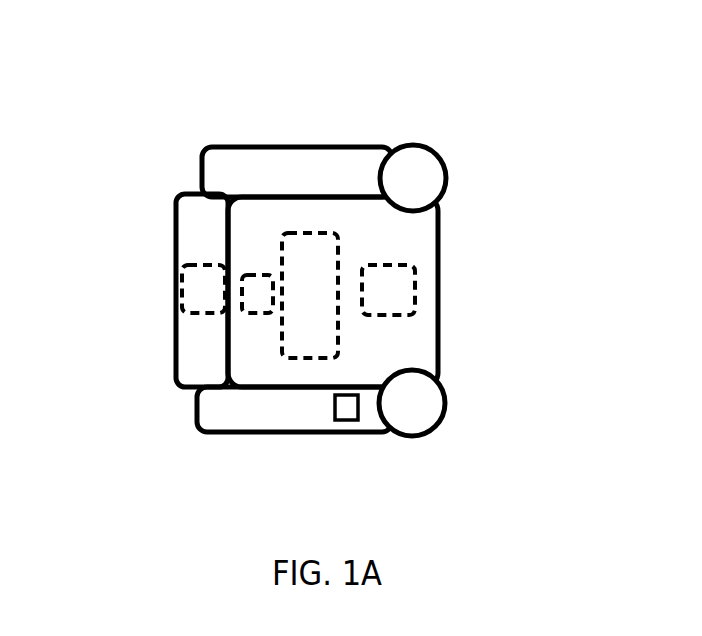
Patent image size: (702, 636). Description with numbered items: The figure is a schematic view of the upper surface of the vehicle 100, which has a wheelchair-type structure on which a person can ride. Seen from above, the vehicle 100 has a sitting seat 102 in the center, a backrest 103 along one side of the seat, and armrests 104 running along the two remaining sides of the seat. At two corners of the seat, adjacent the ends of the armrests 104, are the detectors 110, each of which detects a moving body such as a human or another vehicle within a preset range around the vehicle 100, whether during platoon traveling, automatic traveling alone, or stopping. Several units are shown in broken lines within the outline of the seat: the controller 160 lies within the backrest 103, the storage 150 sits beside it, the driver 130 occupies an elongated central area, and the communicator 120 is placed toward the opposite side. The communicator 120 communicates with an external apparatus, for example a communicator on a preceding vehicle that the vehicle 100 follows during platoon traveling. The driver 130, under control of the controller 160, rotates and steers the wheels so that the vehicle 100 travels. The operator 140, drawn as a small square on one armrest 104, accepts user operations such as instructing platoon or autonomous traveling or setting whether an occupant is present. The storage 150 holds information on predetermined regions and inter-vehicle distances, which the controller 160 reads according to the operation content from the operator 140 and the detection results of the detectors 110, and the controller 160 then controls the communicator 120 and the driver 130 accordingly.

The vehicle 100 is at (344, 48).
The sitting seat 102 is at (440, 226).
The backrest 103 is at (176, 215).
The armrests 104 is at (260, 147).
The detectors 110 is at (430, 152).
The communicator 120 is at (415, 286).
The driver 130 is at (318, 233).
The operator 140 is at (356, 422).
The storage 150 is at (258, 313).
The controller 160 is at (172, 300).